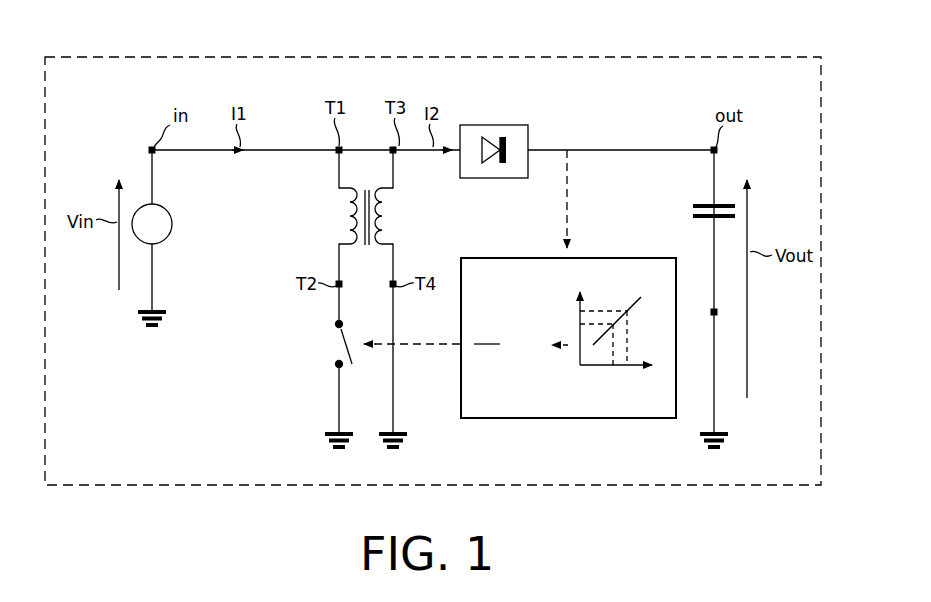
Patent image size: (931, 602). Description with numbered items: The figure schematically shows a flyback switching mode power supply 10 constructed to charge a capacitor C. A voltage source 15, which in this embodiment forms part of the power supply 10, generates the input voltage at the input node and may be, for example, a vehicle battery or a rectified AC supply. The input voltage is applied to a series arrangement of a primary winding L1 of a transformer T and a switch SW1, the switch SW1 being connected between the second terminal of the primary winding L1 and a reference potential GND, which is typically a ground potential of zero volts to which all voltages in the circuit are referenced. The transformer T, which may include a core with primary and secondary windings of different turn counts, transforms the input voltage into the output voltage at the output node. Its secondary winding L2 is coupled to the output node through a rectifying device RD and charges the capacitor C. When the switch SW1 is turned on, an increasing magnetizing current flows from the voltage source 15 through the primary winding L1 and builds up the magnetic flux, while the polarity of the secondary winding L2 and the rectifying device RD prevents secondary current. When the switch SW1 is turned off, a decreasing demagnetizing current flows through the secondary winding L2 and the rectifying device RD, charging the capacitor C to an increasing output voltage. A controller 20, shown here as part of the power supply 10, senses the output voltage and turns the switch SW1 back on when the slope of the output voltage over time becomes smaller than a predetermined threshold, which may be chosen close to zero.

The flyback switching mode power supply 10 is at (114, 56).
The voltage source 15 is at (173, 222).
The controller 20 is at (535, 420).
The transformer T is at (367, 260).
The primary winding L1 is at (335, 216).
The secondary winding L2 is at (397, 216).
The switch SW1 is at (336, 348).
The reference potential GND is at (324, 433).
The rectifying device RD is at (500, 124).
The capacitor C is at (706, 203).